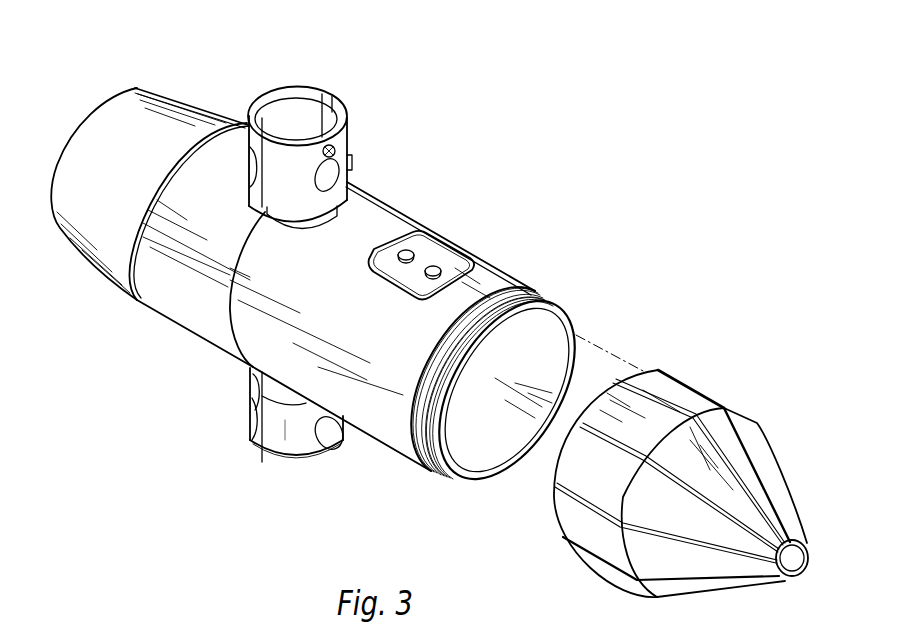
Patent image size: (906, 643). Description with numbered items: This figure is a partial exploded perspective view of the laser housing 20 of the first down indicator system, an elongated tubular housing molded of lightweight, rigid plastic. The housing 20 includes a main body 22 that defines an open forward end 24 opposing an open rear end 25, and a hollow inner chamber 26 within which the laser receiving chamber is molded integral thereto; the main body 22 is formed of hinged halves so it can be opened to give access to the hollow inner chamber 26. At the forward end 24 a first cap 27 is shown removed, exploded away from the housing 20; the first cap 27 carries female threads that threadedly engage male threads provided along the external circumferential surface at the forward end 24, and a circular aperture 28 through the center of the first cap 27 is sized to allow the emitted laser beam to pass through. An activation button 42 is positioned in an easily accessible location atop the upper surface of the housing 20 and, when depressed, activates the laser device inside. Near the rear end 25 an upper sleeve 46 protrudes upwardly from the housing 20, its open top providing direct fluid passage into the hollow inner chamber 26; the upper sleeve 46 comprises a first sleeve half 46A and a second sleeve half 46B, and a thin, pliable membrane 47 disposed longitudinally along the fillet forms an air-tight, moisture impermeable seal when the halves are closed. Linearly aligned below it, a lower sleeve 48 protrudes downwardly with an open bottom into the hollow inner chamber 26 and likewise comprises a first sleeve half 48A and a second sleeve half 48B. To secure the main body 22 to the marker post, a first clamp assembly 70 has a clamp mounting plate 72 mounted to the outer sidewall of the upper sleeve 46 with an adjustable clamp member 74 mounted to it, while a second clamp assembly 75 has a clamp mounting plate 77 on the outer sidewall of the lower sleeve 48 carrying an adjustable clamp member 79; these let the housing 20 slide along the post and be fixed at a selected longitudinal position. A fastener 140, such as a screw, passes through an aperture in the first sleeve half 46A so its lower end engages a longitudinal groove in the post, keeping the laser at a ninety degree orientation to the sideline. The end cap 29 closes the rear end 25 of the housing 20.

The laser housing 20 is at (383, 362).
The main body 22 is at (232, 256).
The open forward end 24 is at (508, 284).
The open rear end 25 is at (247, 125).
The hollow inner chamber 26 is at (545, 356).
The first cap 27 is at (768, 472).
The circular aperture 28 is at (795, 576).
The end cap 29 is at (100, 127).
The activation button 42 is at (435, 266).
The upper sleeve 46 is at (354, 140).
The first sleeve half 46A is at (347, 128).
The second sleeve half 46B is at (253, 100).
The thin, pliable membrane 47 is at (328, 103).
The lower sleeve 48 is at (249, 467).
The first sleeve half 48A is at (283, 468).
The second sleeve half 48B is at (250, 392).
The first clamp assembly 70 is at (243, 100).
The clamp mounting plate 72 is at (339, 178).
The adjustable clamp member 74 is at (248, 173).
The second clamp assembly 75 is at (329, 447).
The clamp mounting plate 77 is at (283, 425).
The adjustable clamp member 79 is at (253, 410).
The fastener 140 is at (336, 150).